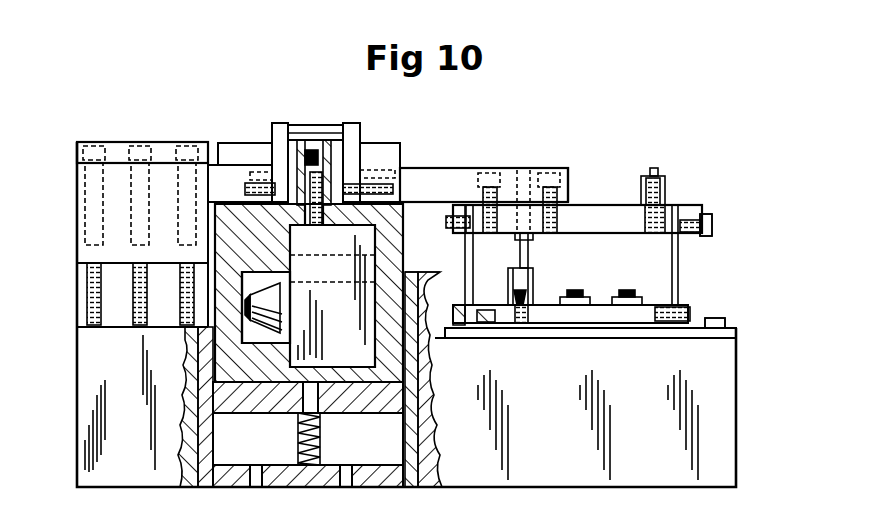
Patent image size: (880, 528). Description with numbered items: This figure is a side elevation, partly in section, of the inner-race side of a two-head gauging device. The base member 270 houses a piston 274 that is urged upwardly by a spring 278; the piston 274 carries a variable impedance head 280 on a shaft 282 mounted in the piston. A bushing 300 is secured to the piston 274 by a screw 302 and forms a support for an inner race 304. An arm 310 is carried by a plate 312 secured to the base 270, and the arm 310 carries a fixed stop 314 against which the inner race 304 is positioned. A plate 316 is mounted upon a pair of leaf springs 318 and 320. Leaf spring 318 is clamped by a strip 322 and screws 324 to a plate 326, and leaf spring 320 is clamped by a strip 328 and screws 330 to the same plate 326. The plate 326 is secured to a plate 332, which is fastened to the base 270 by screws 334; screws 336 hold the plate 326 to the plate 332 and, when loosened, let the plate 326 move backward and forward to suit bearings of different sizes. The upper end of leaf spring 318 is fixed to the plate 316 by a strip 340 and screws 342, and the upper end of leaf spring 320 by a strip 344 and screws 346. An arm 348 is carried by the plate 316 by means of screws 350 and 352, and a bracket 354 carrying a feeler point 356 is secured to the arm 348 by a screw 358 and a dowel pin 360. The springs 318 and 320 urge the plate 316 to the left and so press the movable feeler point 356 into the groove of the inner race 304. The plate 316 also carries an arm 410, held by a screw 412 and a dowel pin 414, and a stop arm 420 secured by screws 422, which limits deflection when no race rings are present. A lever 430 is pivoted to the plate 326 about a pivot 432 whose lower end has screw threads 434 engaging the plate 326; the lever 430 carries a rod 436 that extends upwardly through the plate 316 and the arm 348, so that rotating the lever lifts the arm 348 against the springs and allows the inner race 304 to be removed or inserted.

The base member 270 is at (85, 435).
The piston 274 is at (255, 413).
The spring 278 is at (296, 450).
The variable impedance head 280 is at (345, 360).
The shaft 282 is at (290, 273).
The bushing 300 is at (245, 186).
The screw 302 is at (314, 226).
The inner race 304 is at (305, 125).
The arm 310 is at (236, 172).
The plate 312 is at (135, 142).
The fixed stop 314 is at (281, 123).
The plate 316 is at (610, 236).
The leaf spring 318 is at (680, 282).
The leaf spring 320 is at (473, 300).
The strip 322 is at (690, 306).
The screws 324 is at (722, 320).
The plate 326 is at (600, 305).
The strip 328 is at (458, 300).
The screws 330 is at (453, 327).
The plate 332 is at (740, 333).
The screws 334 is at (730, 324).
The screws 336 is at (575, 290).
The strip 340 is at (703, 205).
The screws 342 is at (690, 236).
The strip 344 is at (455, 236).
The screws 346 is at (452, 224).
The arm 348 is at (450, 168).
The screw 350 is at (560, 168).
The screw 352 is at (500, 168).
The bracket 354 is at (365, 152).
The feeler point 356 is at (349, 123).
The screw 358 is at (395, 189).
The dowel pin 360 is at (390, 174).
The arm 410 is at (668, 186).
The screw 412 is at (640, 208).
The dowel pin 414 is at (660, 170).
The stop arm 420 is at (712, 216).
The screws 422 is at (712, 230).
The lever 430 is at (535, 292).
The pivot 432 is at (530, 266).
The screw threads 434 is at (530, 318).
The rod 436 is at (514, 240).